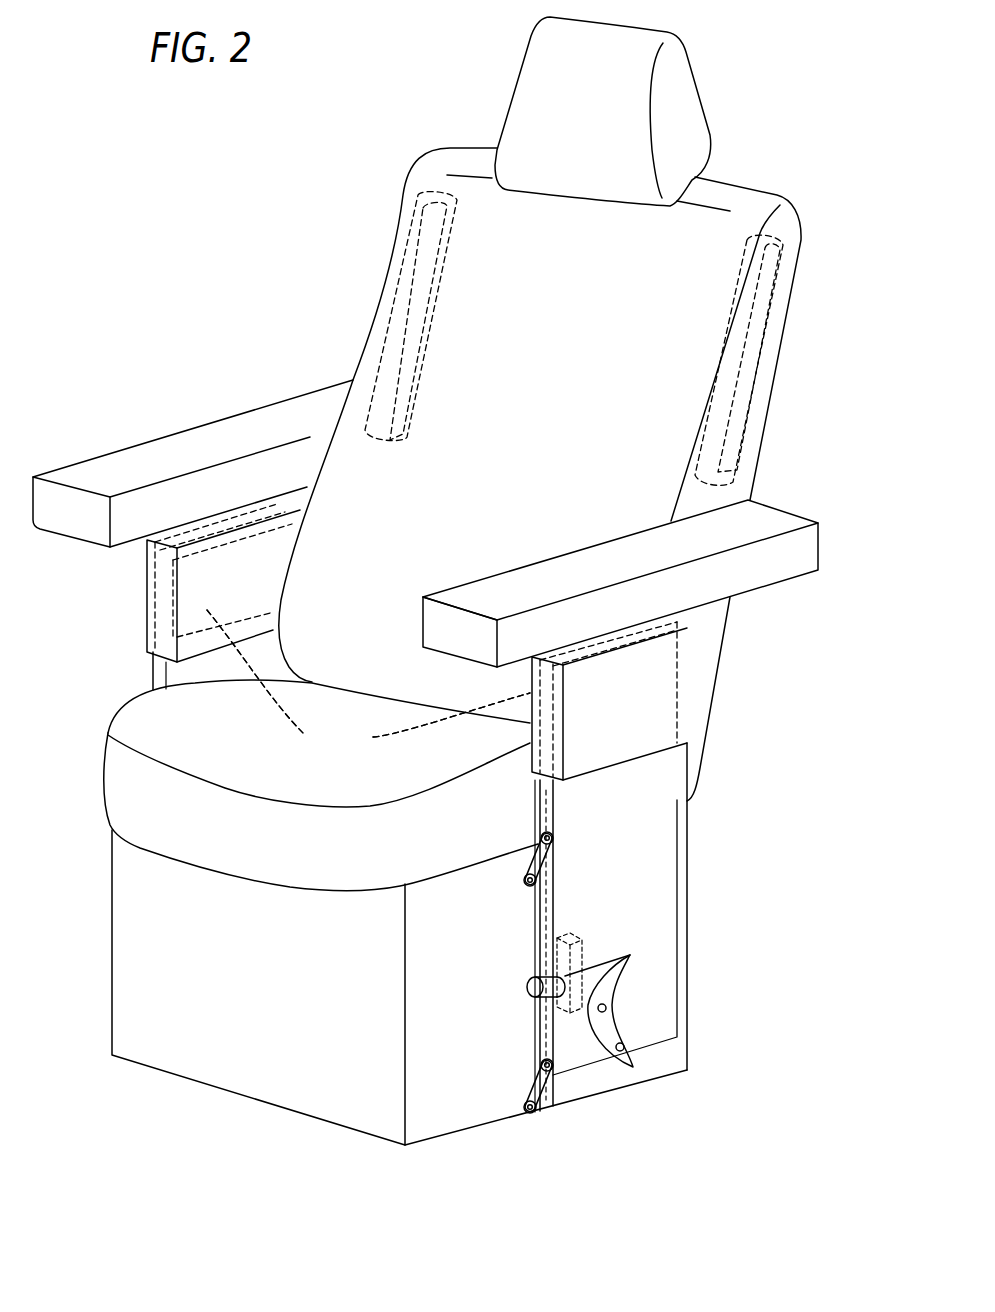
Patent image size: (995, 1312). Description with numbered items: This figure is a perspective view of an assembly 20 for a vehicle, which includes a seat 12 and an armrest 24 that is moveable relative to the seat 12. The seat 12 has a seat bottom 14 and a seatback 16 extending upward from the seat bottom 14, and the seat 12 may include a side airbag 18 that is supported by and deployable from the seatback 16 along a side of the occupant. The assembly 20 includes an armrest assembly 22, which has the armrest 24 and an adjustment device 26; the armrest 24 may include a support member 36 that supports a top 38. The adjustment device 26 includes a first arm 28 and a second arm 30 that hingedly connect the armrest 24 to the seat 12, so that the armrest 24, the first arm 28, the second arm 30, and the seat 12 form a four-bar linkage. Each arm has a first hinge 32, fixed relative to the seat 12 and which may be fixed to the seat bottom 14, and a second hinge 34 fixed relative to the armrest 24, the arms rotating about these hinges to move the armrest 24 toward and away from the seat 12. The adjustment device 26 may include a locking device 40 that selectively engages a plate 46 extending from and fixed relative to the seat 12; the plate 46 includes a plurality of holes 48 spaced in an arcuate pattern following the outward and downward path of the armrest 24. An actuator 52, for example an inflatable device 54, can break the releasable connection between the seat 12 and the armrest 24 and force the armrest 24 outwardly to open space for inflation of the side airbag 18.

The seat 12 is at (788, 412).
The seat bottom 14 is at (130, 962).
The seatback 16 is at (731, 192).
The side airbag 18 is at (412, 258).
The assembly 20 is at (205, 267).
The armrest assembly 22 is at (698, 946).
The armrest 24 is at (118, 605).
The adjustment device 26 is at (521, 842).
The first arm 28 is at (550, 1090).
The second arm 30 is at (548, 866).
The first hinge 32 is at (527, 887).
The second hinge 34 is at (546, 833).
The support member 36 is at (150, 670).
The top 38 is at (200, 428).
The locking device 40 is at (526, 986).
The plate 46 is at (618, 1070).
The holes 48 is at (614, 1003).
The actuator 52 is at (368, 681).
The inflatable device 54 is at (374, 737).